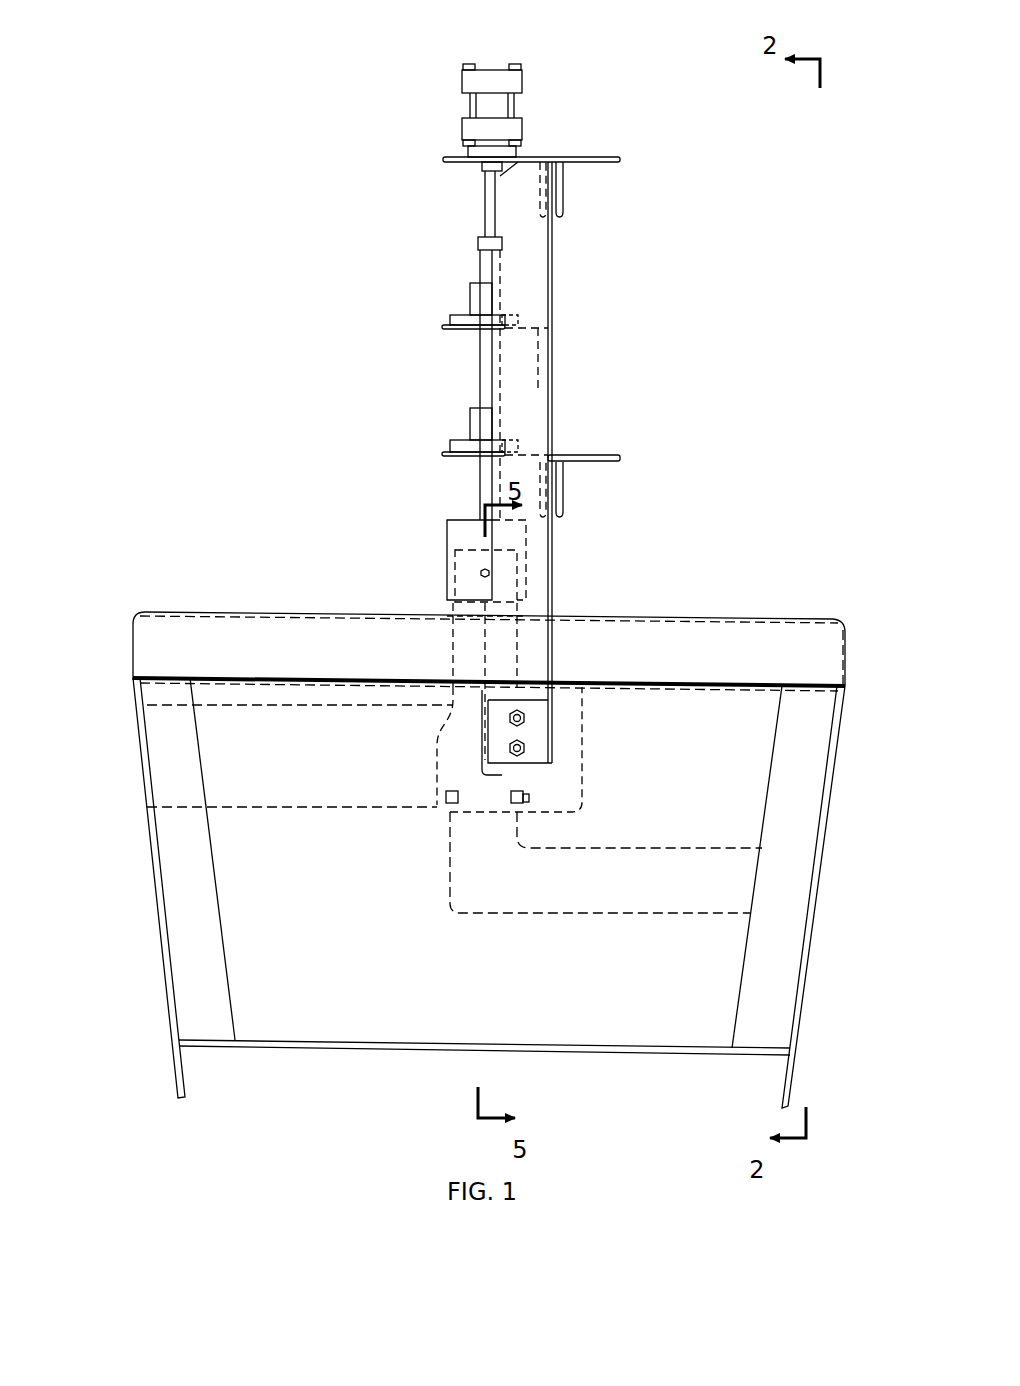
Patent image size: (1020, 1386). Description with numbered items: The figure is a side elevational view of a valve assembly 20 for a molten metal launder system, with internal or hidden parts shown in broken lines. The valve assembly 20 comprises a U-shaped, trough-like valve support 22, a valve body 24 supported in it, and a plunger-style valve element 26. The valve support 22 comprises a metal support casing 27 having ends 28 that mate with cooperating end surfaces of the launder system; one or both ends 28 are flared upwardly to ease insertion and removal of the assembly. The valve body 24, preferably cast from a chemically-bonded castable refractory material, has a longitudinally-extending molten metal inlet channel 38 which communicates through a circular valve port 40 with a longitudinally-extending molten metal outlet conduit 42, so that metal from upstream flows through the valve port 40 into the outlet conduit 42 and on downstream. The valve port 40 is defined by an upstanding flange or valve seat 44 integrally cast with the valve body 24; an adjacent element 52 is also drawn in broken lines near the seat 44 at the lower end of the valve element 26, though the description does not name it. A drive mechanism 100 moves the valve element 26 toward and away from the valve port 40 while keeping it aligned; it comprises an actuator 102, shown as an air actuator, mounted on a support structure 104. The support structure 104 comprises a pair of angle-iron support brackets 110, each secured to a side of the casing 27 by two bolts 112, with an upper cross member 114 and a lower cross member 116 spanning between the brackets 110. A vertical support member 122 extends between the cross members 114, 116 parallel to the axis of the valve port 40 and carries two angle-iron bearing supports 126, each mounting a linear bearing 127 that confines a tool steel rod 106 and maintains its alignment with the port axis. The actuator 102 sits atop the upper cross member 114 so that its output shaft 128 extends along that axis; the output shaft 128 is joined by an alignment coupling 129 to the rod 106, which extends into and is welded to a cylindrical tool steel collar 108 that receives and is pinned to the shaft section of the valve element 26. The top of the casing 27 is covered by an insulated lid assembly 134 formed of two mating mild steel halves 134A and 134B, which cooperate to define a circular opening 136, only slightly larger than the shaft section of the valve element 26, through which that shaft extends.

The valve assembly 20 is at (750, 455).
The valve support 22 is at (330, 1050).
The valve body 24 is at (288, 935).
The valve element 26 is at (442, 720).
The support casing 27 is at (632, 1012).
The ends 28 is at (165, 963).
The molten metal inlet channel 38 is at (266, 785).
The valve port 40 is at (492, 818).
The molten metal outlet conduit 42 is at (615, 895).
The valve seat 44 is at (446, 800).
The seal 52 is at (523, 797).
The drive mechanism 100 is at (312, 170).
The actuator 102 is at (492, 68).
The support structure 104 is at (582, 370).
The rod 106 is at (479, 380).
The collar 108 is at (447, 530).
The support brackets 110 is at (552, 265).
The bolts 112 is at (528, 717).
The upper cross member 114 is at (600, 157).
The lower cross member 116 is at (590, 455).
The vertical support member 122 is at (563, 325).
The bearing supports 126 is at (450, 322).
The linear bearing 127 is at (470, 298).
The output shaft 128 is at (484, 200).
The alignment coupling 129 is at (478, 243).
The lid assembly 134 is at (233, 545).
The first lid half 134A is at (305, 628).
The second lid half 134B is at (700, 633).
The opening 136 is at (524, 613).